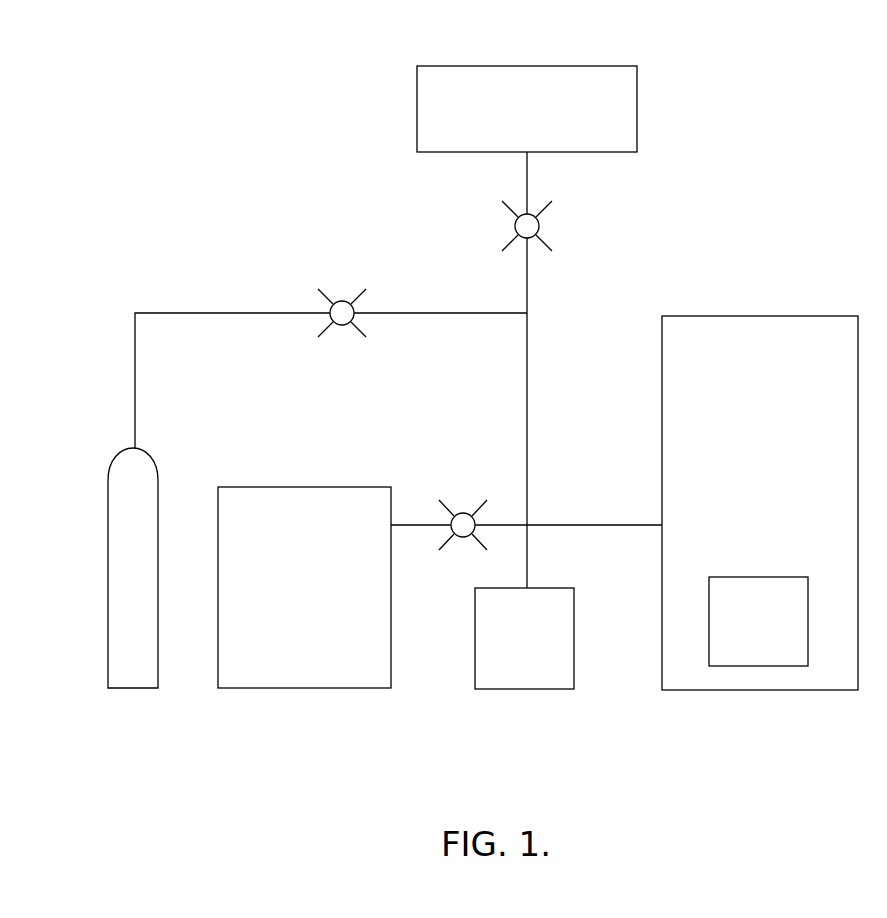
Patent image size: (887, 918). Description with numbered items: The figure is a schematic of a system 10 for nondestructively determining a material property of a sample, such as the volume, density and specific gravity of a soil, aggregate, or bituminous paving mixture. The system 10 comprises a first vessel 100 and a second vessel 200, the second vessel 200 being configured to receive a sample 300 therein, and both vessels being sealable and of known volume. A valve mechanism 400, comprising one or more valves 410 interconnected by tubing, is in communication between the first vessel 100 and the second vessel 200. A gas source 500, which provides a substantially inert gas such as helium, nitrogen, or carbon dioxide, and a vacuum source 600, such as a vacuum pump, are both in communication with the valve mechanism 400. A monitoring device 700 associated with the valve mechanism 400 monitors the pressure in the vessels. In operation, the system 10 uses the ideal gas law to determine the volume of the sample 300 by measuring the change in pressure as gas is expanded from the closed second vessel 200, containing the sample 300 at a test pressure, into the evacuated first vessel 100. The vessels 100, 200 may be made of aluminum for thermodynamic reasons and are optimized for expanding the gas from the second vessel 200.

The system 10 is at (245, 164).
The first vessel 100 is at (287, 599).
The second vessel 200 is at (741, 514).
The sample 300 is at (741, 634).
The valve mechanism 400 is at (563, 328).
The valve 410 is at (513, 226).
The gas source 500 is at (115, 589).
The vacuum source 600 is at (509, 121).
The monitoring device 700 is at (506, 656).